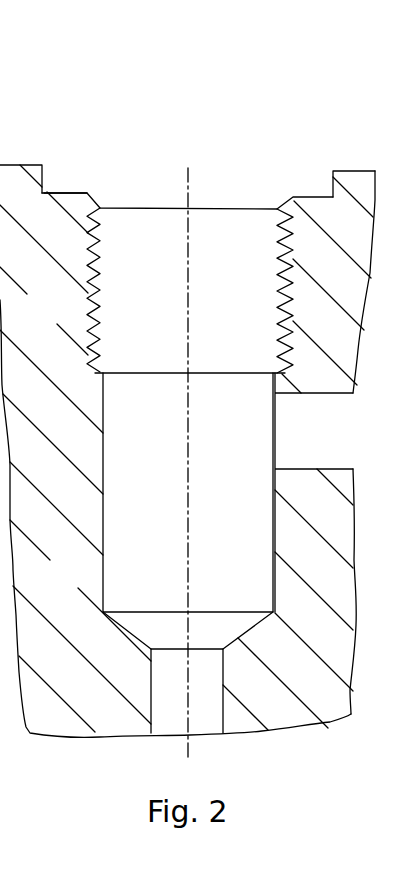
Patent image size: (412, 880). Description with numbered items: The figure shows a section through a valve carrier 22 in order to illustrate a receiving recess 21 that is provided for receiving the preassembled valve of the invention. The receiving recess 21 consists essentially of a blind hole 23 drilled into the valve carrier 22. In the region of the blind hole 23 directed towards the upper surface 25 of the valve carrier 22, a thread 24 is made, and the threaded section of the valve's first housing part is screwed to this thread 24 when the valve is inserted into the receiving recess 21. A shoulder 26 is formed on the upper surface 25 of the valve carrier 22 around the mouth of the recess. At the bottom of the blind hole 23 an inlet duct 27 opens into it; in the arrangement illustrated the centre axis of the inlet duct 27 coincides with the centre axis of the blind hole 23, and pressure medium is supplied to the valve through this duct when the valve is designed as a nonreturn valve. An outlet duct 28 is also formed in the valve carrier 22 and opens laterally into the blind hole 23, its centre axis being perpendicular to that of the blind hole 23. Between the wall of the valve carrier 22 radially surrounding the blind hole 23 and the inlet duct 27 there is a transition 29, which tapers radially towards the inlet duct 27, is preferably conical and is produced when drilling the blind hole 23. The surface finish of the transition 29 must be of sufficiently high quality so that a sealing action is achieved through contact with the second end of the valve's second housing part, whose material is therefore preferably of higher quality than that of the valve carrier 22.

The receiving recess 21 is at (222, 172).
The valve carrier 22 is at (353, 189).
The blind hole 23 is at (128, 552).
The thread 24 is at (88, 308).
The upper surface 25 is at (22, 164).
The shoulder 26 is at (77, 192).
The inlet duct 27 is at (160, 690).
The outlet duct 28 is at (332, 437).
The transition 29 is at (227, 640).